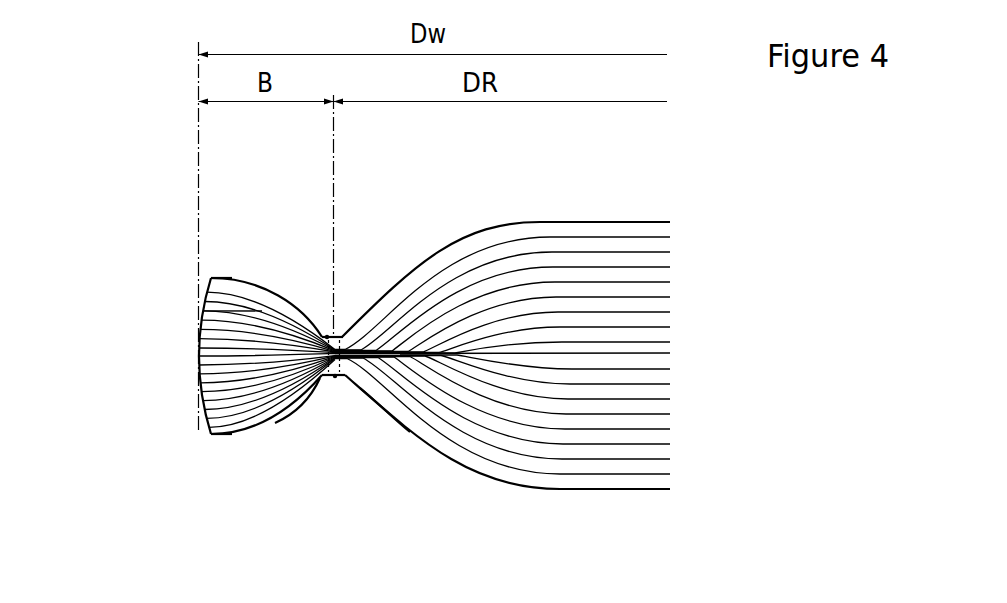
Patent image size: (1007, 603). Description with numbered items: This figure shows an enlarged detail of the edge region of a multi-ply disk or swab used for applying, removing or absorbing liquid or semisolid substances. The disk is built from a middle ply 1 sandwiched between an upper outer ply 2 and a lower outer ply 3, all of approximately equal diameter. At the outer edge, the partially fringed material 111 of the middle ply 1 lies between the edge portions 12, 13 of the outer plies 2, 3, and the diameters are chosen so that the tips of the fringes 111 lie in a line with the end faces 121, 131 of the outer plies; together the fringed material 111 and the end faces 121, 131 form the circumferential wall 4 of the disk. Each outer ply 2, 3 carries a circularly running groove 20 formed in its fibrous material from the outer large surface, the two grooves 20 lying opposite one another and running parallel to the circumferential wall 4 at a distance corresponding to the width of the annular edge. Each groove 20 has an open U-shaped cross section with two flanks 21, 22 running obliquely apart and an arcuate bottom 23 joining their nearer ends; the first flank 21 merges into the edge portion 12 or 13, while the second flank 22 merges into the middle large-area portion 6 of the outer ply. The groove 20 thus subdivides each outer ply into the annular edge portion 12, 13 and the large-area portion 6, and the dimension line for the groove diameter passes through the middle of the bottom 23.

The middle ply 1 is at (648, 352).
The upper outer ply 2 is at (493, 233).
The lower outer ply 3 is at (498, 480).
The circumferential wall 4 is at (197, 348).
The large-area portion 6 is at (624, 222).
The edge portion of upper outer ply 12 is at (253, 276).
The edge portion of lower outer ply 13 is at (253, 435).
The groove 20 is at (347, 326).
The first flank 21 is at (291, 406).
The second flank 22 is at (390, 407).
The arcuate bottom 23 is at (327, 337).
The fringed material of the middle ply 111 is at (214, 323).
The end face of upper outer ply 121 is at (210, 281).
The end face of lower outer ply 131 is at (207, 430).